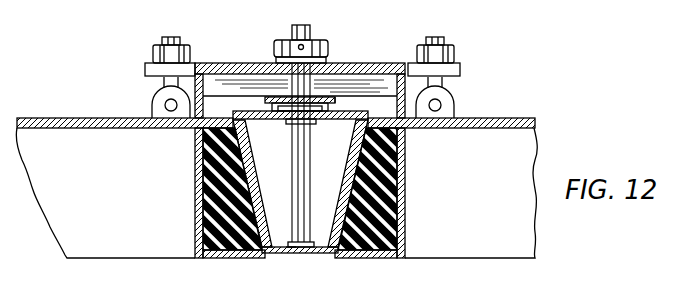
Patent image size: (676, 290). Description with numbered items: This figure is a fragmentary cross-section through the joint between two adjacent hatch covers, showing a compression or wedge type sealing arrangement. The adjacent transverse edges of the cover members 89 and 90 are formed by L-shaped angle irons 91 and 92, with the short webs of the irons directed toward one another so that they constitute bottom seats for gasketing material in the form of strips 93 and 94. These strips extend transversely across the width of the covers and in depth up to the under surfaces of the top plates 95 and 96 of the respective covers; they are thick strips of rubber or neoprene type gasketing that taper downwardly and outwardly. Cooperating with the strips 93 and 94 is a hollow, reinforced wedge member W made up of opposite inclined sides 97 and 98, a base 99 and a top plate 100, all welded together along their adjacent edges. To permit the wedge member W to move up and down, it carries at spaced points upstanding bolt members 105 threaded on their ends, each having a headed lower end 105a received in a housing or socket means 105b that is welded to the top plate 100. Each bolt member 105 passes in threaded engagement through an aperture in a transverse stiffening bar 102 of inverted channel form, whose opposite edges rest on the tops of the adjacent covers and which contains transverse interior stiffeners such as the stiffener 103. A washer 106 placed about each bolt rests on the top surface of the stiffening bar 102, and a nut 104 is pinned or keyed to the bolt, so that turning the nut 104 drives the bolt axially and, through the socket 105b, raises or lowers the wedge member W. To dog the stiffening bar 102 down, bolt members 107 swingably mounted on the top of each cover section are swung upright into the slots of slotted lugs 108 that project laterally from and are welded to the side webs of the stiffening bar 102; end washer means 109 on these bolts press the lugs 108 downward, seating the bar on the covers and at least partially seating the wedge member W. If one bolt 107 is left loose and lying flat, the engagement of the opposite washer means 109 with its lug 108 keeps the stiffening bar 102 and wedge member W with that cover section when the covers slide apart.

The cover member 89 is at (56, 117).
The cover member 90 is at (535, 118).
The L-shaped angle iron 91 is at (195, 174).
The L-shaped angle iron 92 is at (405, 176).
The gasketing strip 93 is at (210, 216).
The gasketing strip 94 is at (392, 217).
The top plate 95 is at (130, 117).
The top plate 96 is at (499, 117).
The inclined side 97 is at (259, 183).
The inclined side 98 is at (344, 183).
The base 99 is at (312, 252).
The top plate 100 is at (359, 118).
The transverse stiffening bar 102 is at (388, 62).
The transverse interior stiffener 103 is at (228, 85).
The nut 104 is at (283, 42).
The bolt member 105 is at (303, 25).
The head 105a is at (291, 113).
The housing or socket means 105b is at (348, 113).
The washer 106 is at (326, 60).
The bolt member 107 is at (172, 36).
The slotted lug 108 is at (145, 70).
The end washer means 109 is at (154, 48).
The wedge member W is at (290, 251).